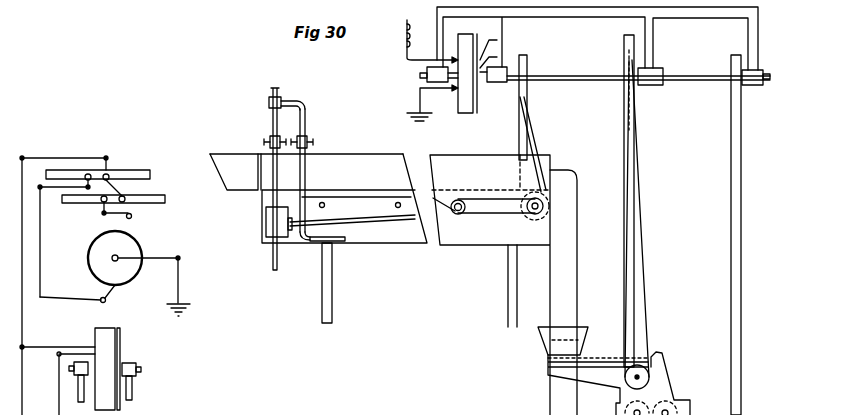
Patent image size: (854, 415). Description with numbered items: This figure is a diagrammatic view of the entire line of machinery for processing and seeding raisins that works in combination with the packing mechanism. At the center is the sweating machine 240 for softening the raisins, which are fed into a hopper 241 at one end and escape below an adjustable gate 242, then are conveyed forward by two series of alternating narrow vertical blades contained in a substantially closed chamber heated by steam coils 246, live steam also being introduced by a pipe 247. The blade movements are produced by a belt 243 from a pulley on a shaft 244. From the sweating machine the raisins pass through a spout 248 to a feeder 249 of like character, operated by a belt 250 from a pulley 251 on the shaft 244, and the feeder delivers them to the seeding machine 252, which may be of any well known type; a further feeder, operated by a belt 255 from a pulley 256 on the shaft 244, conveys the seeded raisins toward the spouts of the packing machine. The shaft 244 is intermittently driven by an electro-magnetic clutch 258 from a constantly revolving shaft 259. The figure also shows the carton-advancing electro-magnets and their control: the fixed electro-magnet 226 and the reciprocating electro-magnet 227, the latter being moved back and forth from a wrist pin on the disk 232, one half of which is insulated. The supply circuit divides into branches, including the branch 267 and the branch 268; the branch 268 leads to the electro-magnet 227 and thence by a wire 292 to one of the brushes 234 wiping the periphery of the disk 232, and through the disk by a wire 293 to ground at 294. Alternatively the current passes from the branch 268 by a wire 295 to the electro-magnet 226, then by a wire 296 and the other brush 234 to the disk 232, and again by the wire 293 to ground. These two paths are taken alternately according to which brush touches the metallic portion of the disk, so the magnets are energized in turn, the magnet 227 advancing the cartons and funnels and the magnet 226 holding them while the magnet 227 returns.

The electro-magnet 226 is at (93, 203).
The electro-magnet 227 is at (118, 172).
The disk 232 is at (124, 247).
The brushes 234 is at (132, 218).
The sweating machine 240 is at (395, 173).
The hopper 241 is at (237, 162).
The adjustable gate 242 is at (255, 172).
The belt 243 is at (537, 134).
The shaft 244 is at (537, 75).
The steam coils 246 is at (398, 223).
The pipe 247 is at (304, 123).
The spout 248 is at (568, 233).
The feeder 249 is at (544, 342).
The belt 250 is at (635, 144).
The pulley 251 is at (636, 92).
The seeding machine 252 is at (627, 403).
The belt 255 is at (739, 326).
The pulley 256 is at (741, 106).
The electro-magnetic clutch 258 is at (107, 339).
The constantly revolving shaft 259 is at (420, 77).
The branch 267 is at (82, 346).
The branch 268 is at (79, 157).
The wire 292 is at (41, 246).
The wire 293 is at (170, 257).
The ground 294 is at (196, 311).
The wire 295 is at (122, 194).
The wire 296 is at (110, 213).